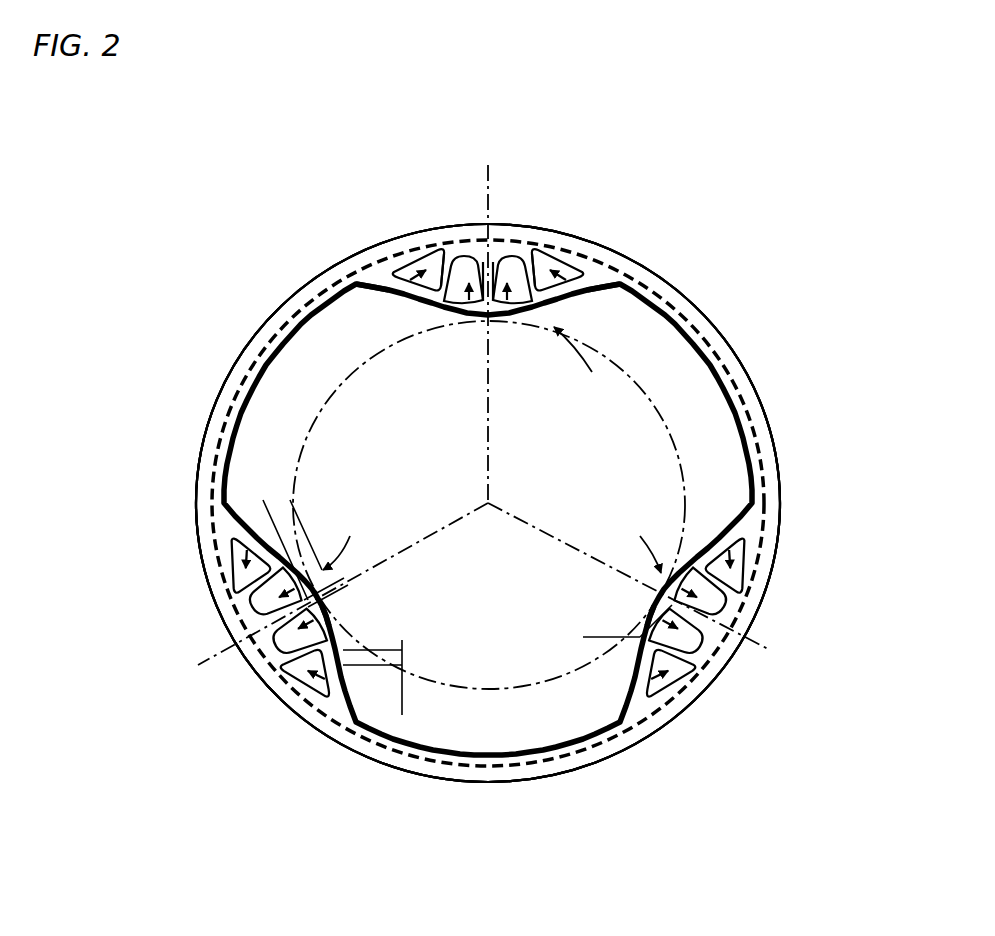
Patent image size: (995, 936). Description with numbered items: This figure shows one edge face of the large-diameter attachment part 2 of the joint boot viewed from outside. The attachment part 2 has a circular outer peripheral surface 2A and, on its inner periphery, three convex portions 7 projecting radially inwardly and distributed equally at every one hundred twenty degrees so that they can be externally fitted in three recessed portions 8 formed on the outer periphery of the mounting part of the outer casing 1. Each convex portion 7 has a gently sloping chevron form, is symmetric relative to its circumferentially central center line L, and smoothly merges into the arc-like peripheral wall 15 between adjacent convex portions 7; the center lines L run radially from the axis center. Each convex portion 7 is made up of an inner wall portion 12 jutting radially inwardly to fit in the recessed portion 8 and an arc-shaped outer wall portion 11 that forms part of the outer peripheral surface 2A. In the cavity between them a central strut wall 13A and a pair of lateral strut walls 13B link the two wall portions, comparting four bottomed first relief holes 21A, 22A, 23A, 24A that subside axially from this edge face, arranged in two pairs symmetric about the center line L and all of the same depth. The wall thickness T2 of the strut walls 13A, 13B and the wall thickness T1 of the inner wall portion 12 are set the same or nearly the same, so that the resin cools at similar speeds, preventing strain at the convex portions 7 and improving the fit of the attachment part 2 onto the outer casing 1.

The outer casing 1 is at (250, 340).
The large-diameter attachment part 2 is at (756, 234).
The outer peripheral surface 2A is at (628, 258).
The convex portion 7 is at (492, 450).
The recessed portion 8 is at (388, 280).
The outer wall portion 11 is at (460, 242).
The inner wall portion 12 is at (440, 312).
The central strut wall 13A is at (505, 252).
The lateral strut wall 13B is at (430, 246).
The arc-like peripheral wall 15 is at (213, 417).
The first relief hole 21A is at (405, 288).
The first relief hole 22A is at (470, 305).
The first relief hole 23A is at (512, 305).
The first relief hole 24A is at (568, 292).
The center line L is at (483, 411).
The wall thickness of the inner wall portion T1 is at (624, 617).
The wall thickness of the first strut walls T2 is at (341, 589).